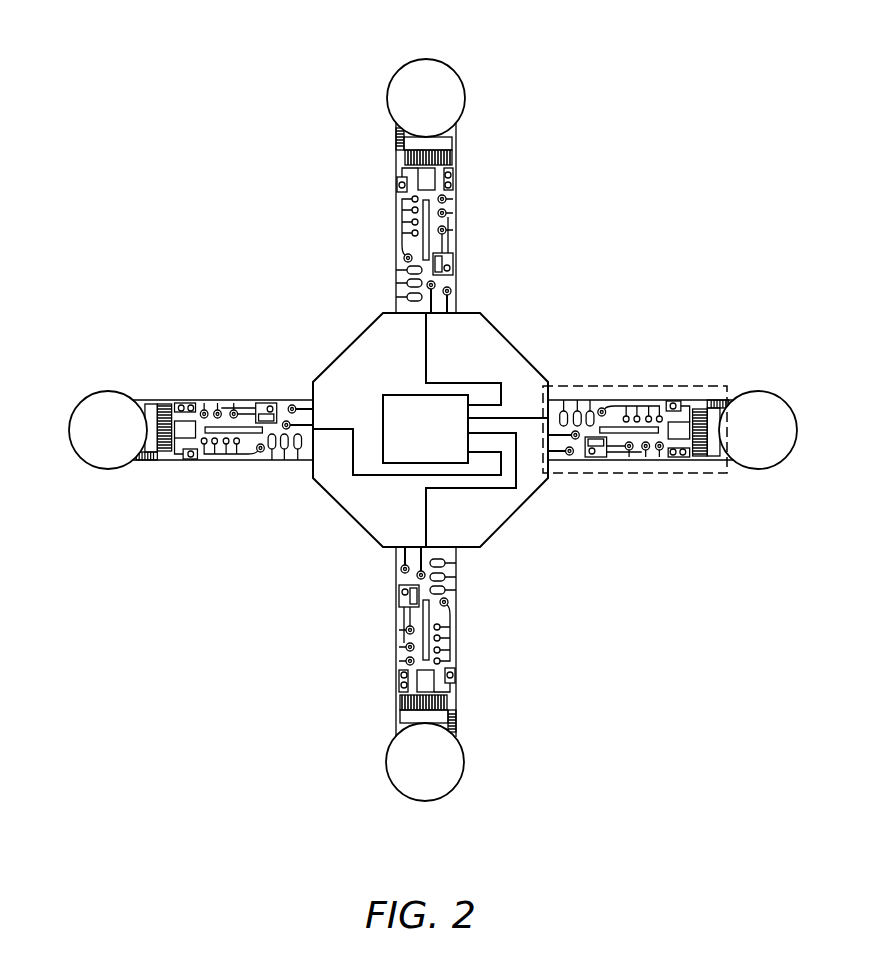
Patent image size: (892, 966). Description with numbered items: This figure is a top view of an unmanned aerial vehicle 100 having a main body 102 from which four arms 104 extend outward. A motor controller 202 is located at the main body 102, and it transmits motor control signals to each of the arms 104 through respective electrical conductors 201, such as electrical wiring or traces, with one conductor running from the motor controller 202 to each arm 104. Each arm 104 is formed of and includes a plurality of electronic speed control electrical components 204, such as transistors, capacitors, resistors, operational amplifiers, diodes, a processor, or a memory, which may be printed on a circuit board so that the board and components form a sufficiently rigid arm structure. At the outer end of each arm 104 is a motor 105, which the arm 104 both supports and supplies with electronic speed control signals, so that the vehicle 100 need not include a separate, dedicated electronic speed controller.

The unmanned aerial vehicle 100 is at (436, 408).
The main body 102 is at (517, 507).
The arm 104 is at (396, 243).
The motor 105 is at (451, 64).
The electrical conductor 201 is at (427, 342).
The motor controller 202 is at (411, 395).
The electronic speed control electrical components 204 is at (641, 385).